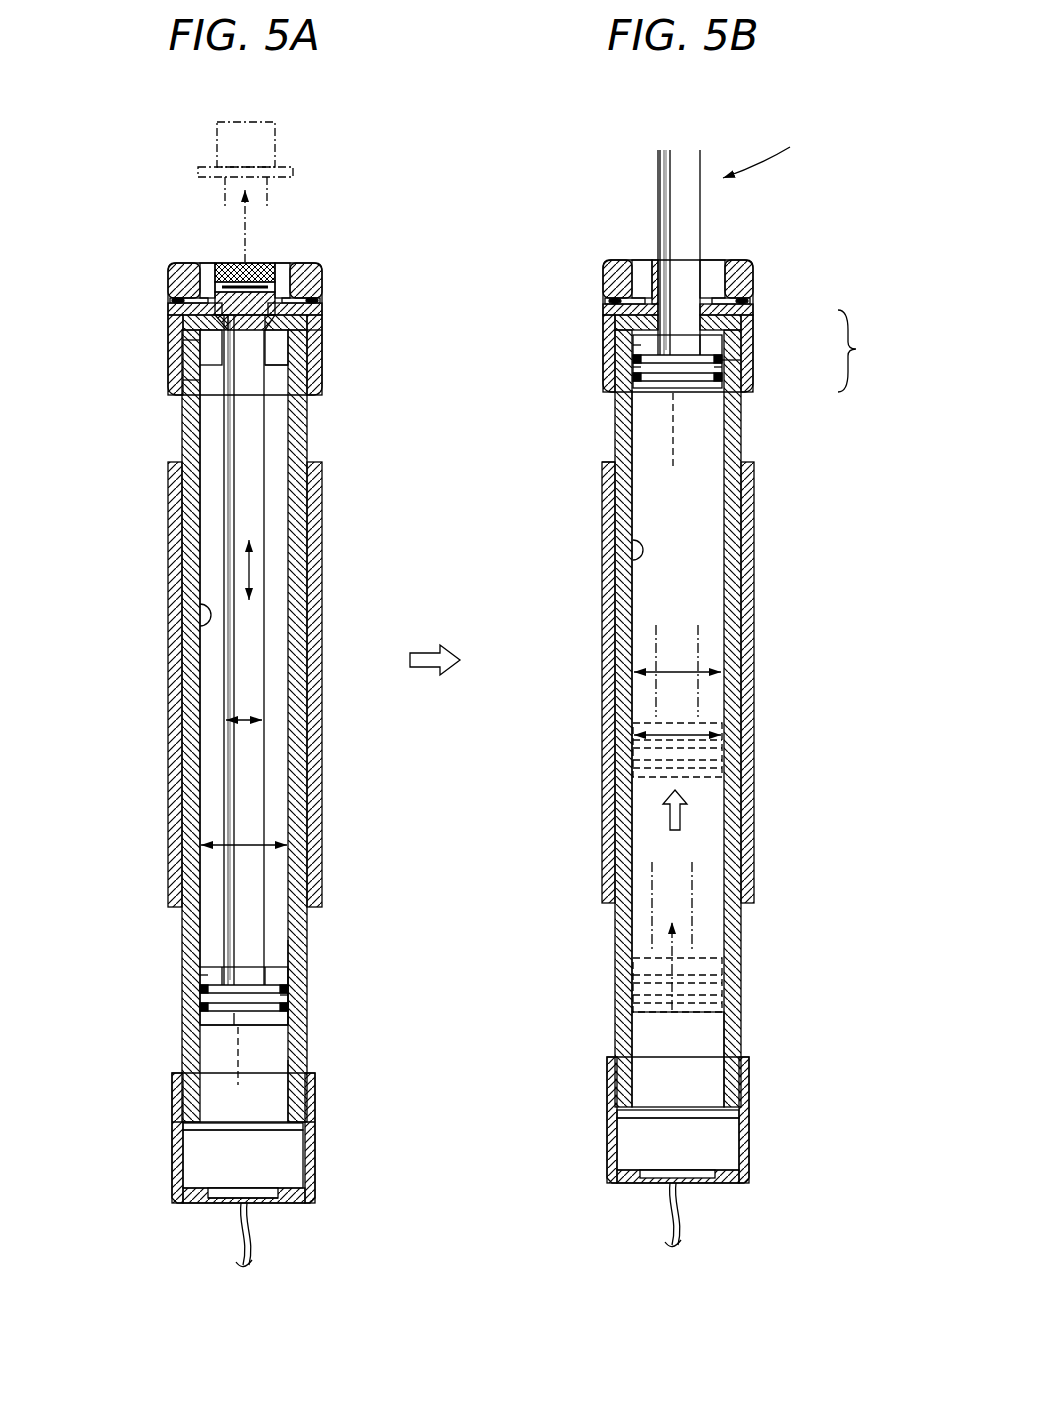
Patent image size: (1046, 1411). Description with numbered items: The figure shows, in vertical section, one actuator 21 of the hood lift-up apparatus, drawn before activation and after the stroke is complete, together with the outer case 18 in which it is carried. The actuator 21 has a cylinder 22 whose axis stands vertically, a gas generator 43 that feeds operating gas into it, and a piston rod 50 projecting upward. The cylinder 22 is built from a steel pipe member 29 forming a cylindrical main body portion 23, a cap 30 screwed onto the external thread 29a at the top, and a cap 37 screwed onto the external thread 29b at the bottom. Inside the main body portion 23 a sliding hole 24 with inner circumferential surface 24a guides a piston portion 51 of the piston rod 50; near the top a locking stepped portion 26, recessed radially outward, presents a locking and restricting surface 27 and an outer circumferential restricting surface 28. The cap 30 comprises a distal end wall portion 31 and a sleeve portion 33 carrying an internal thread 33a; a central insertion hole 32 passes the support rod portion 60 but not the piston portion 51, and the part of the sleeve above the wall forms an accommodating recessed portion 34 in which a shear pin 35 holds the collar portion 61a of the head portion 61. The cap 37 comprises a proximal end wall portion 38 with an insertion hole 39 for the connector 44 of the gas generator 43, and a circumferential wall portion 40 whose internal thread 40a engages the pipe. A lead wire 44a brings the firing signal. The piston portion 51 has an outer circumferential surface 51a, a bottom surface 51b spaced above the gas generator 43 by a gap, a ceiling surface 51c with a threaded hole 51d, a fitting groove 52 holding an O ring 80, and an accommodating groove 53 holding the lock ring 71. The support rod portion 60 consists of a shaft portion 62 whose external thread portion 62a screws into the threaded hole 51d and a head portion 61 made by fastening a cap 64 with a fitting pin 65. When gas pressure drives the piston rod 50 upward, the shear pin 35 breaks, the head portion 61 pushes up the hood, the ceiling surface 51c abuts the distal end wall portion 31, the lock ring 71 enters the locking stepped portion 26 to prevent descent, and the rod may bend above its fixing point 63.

In FIG. 5A, the outer cylinder 18 is at (182, 748).
In FIG. 5B, the outer cylinder 18 is at (615, 798).
In FIG. 5A, the actuator 21 is at (135, 1105).
In FIG. 5B, the actuator 21 is at (590, 1045).
In FIG. 5B, the cylinder 22 is at (742, 972).
In FIG. 5A, the cylindrical main body portion 23 is at (187, 437).
In FIG. 5A, the sliding hole 24 is at (218, 565).
In FIG. 5B, the sliding hole 24 is at (663, 588).
In FIG. 5A, the inner circumferential surface 24a is at (194, 620).
In FIG. 5B, the inner circumferential surface 24a is at (634, 552).
In FIG. 5A, the locking stepped portion 26 is at (172, 350).
In FIG. 5B, the locking stepped portion 26 is at (861, 351).
In FIG. 5A, the locking and restricting surface 27 is at (300, 336).
In FIG. 5B, the locking and restricting surface 27 is at (727, 368).
In FIG. 5A, the outer circumferential restricting surface 28 is at (298, 368).
In FIG. 5B, the outer circumferential restricting surface 28 is at (727, 337).
In FIG. 5A, the steel pipe member 29 is at (305, 962).
In FIG. 5A, the external thread 29a is at (280, 370).
In FIG. 5A, the external thread 29b is at (303, 1068).
In FIG. 5A, the cap 30 is at (177, 385).
In FIG. 5A, the distal end wall portion 31 is at (170, 315).
In FIG. 5B, the distal end wall portion 31 is at (678, 326).
In FIG. 5A, the insertion hole 32 is at (292, 318).
In FIG. 5A, the sleeve portion 33 is at (168, 372).
In FIG. 5A, the internal thread 33a is at (318, 400).
In FIG. 5A, the accommodating recessed portion 34 is at (282, 282).
In FIG. 5B, the accommodating recessed portion 34 is at (713, 270).
In FIG. 5A, the shear pin 35 is at (172, 303).
In FIG. 5B, the shear pin 35 is at (604, 300).
In FIG. 5A, the cap 37 is at (180, 1160).
In FIG. 5A, the proximal end wall portion 38 is at (180, 1200).
In FIG. 5A, the insertion hole 39 is at (290, 1205).
In FIG. 5A, the circumferential wall portion 40 is at (285, 1168).
In FIG. 5A, the internal thread 40a is at (300, 1124).
In FIG. 5A, the gas generator 43 is at (300, 1186).
In FIG. 5B, the gas generator 43 is at (700, 1075).
In FIG. 5A, the connector 44 is at (235, 1212).
In FIG. 5A, the lead wire 44a is at (250, 1218).
In FIG. 5A, the piston rod 50 is at (268, 790).
In FIG. 5B, the piston rod 50 is at (530, 920).
In FIG. 5A, the piston portion 51 is at (213, 960).
In FIG. 5B, the piston portion 51 is at (660, 397).
In FIG. 5A, the outer circumferential surface 51a is at (203, 988).
In FIG. 5A, the bottom surface 51b is at (248, 1024).
In FIG. 5A, the ceiling surface 51c is at (290, 952).
In FIG. 5A, the threaded hole 51d is at (262, 968).
In FIG. 5B, the threaded hole 51d is at (697, 393).
In FIG. 5A, the fitting groove 52 is at (237, 1020).
In FIG. 5A, the accommodating groove 53 is at (205, 978).
In FIG. 5B, the accommodating groove 53 is at (655, 355).
In FIG. 5A, the support rod portion 60 is at (257, 617).
In FIG. 5B, the support rod portion 60 is at (700, 870).
In FIG. 5A, the head portion 61 is at (292, 130).
In FIG. 5A, the collar portion 61a is at (183, 300).
In FIG. 5B, the shaft portion 62 is at (690, 180).
In FIG. 5A, the external thread portion 62a is at (242, 1071).
In FIG. 5B, the external thread portion 62a is at (680, 448).
In FIG. 5B, the fixing point 63 is at (683, 278).
In FIG. 5A, the cap 64 is at (222, 268).
In FIG. 5A, the fitting pin 65 is at (215, 300).
In FIG. 5A, the lock ring 71 is at (287, 1000).
In FIG. 5B, the lock ring 71 is at (640, 360).
In FIG. 5A, the O ring 80 is at (203, 1006).